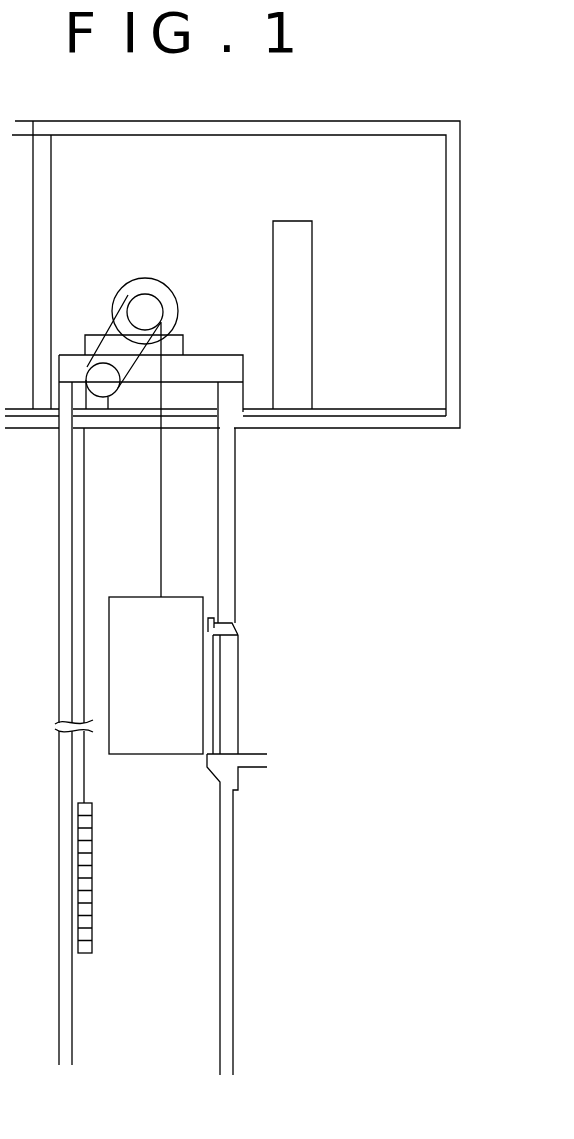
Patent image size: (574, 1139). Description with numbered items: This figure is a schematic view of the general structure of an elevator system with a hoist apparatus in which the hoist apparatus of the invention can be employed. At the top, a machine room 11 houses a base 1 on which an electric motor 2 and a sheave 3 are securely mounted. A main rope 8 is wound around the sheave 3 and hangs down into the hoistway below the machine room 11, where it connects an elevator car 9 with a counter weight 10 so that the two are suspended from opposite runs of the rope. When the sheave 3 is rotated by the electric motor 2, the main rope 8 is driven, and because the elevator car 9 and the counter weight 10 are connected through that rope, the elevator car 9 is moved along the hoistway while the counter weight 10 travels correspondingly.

The base 1 is at (183, 347).
The electric motor 2 is at (160, 281).
The sheave 3 is at (133, 294).
The main rope 8 is at (109, 336).
The elevator car 9 is at (172, 596).
The counter weight 10 is at (93, 862).
The machine room 11 is at (422, 253).